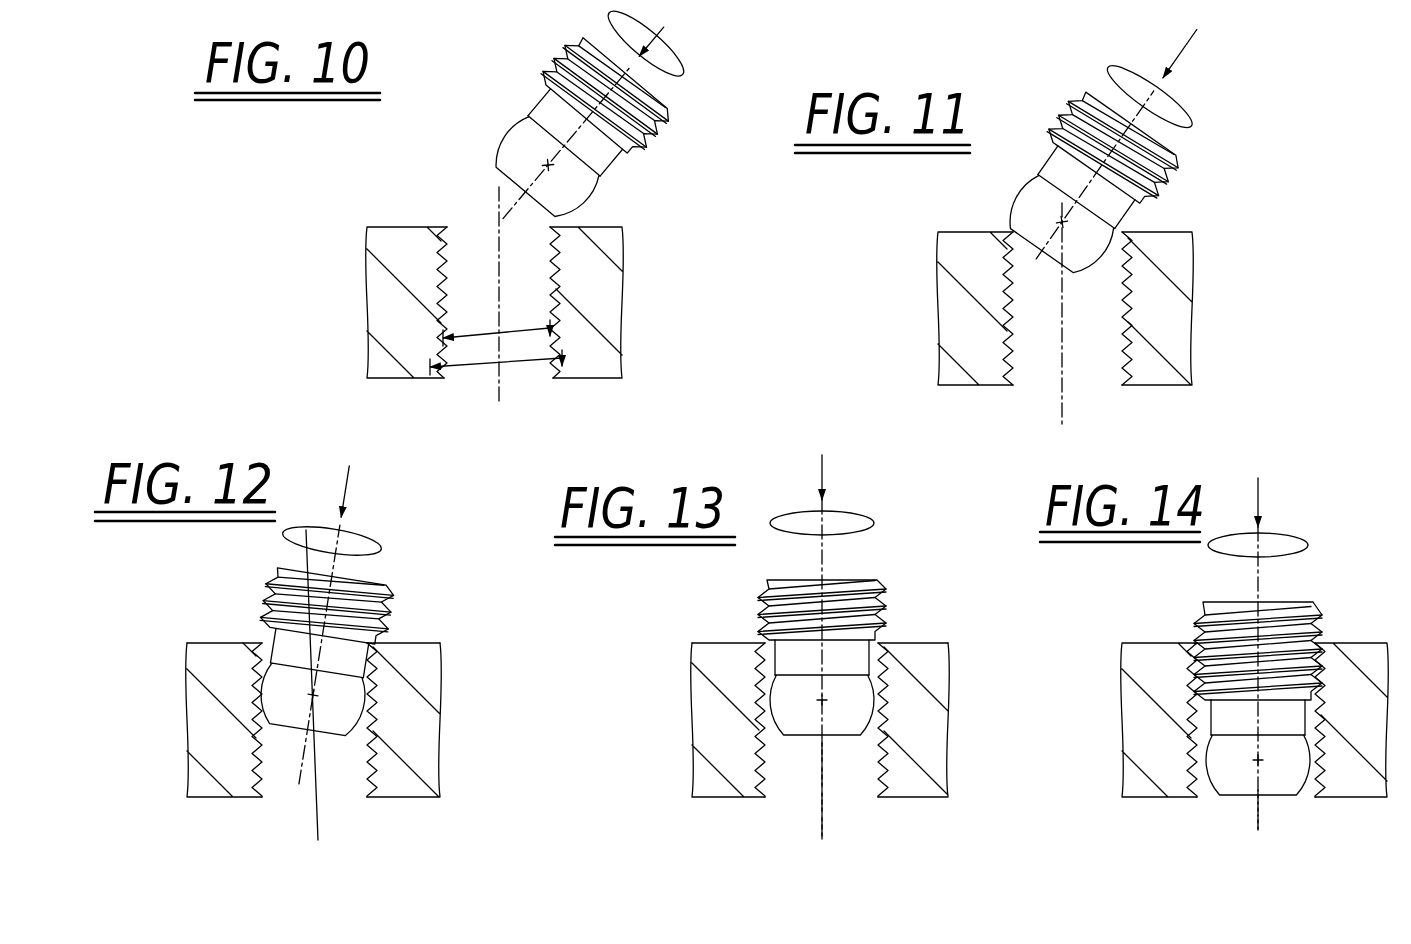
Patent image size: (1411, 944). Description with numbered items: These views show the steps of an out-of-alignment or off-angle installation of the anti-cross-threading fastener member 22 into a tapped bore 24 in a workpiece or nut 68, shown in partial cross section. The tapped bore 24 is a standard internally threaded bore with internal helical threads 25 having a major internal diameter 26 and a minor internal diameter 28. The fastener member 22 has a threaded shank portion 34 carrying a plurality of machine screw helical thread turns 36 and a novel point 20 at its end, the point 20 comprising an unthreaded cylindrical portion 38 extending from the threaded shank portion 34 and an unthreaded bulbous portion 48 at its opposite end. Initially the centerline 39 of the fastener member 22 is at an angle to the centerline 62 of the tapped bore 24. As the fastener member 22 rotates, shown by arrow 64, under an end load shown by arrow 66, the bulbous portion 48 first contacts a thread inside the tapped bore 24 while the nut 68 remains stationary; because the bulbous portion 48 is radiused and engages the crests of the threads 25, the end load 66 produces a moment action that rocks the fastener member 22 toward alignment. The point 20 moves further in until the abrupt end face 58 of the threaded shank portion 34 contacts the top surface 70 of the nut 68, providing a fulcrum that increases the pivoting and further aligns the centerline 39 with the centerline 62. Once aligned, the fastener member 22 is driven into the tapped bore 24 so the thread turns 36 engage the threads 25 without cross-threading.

In FIG. 10, the point 20 is at (573, 132).
In FIG. 11, the point 20 is at (1095, 172).
In FIG. 12, the point 20 is at (311, 668).
In FIG. 13, the point 20 is at (823, 670).
In FIG. 14, the point 20 is at (1254, 709).
In FIG. 10, the fastener member 22 is at (607, 87).
In FIG. 11, the fastener member 22 is at (1107, 137).
In FIG. 12, the fastener member 22 is at (311, 597).
In FIG. 13, the fastener member 22 is at (823, 597).
In FIG. 14, the fastener member 22 is at (1261, 634).
In FIG. 10, the tapped bore 24 is at (553, 360).
In FIG. 10, the internal helical threads 25 is at (441, 254).
In FIG. 11, the internal helical threads 25 is at (1015, 363).
In FIG. 12, the internal helical threads 25 is at (372, 790).
In FIG. 13, the internal helical threads 25 is at (758, 775).
In FIG. 14, the internal helical threads 25 is at (1317, 667).
In FIG. 10, the major internal diameter 26 is at (465, 362).
In FIG. 10, the minor internal diameter 28 is at (477, 330).
In FIG. 10, the threaded shank portion 34 is at (664, 116).
In FIG. 11, the threaded shank portion 34 is at (1177, 160).
In FIG. 12, the threaded shank portion 34 is at (380, 598).
In FIG. 13, the threaded shank portion 34 is at (868, 587).
In FIG. 14, the threaded shank portion 34 is at (1220, 637).
In FIG. 10, the machine screw helical thread turns 36 is at (650, 140).
In FIG. 11, the machine screw helical thread turns 36 is at (1067, 108).
In FIG. 12, the machine screw helical thread turns 36 is at (267, 608).
In FIG. 13, the machine screw helical thread turns 36 is at (757, 603).
In FIG. 14, the machine screw helical thread turns 36 is at (1313, 663).
In FIG. 11, the unthreaded cylindrical portion 38 is at (1100, 187).
In FIG. 12, the unthreaded cylindrical portion 38 is at (316, 660).
In FIG. 13, the unthreaded cylindrical portion 38 is at (853, 657).
In FIG. 14, the unthreaded cylindrical portion 38 is at (1237, 713).
In FIG. 10, the centerline of the fastener member 39 is at (610, 157).
In FIG. 11, the centerline of the fastener member 39 is at (1053, 250).
In FIG. 12, the centerline of the fastener member 39 is at (310, 710).
In FIG. 13, the centerline of the fastener member 39 is at (822, 820).
In FIG. 14, the centerline of the fastener member 39 is at (1260, 808).
In FIG. 10, the unthreaded bulbous portion 48 is at (557, 190).
In FIG. 11, the unthreaded bulbous portion 48 is at (1023, 213).
In FIG. 12, the unthreaded bulbous portion 48 is at (273, 695).
In FIG. 13, the unthreaded bulbous portion 48 is at (795, 708).
In FIG. 14, the unthreaded bulbous portion 48 is at (1230, 777).
In FIG. 10, the abrupt end face 58 is at (547, 83).
In FIG. 11, the abrupt end face 58 is at (1148, 210).
In FIG. 12, the abrupt end face 58 is at (370, 647).
In FIG. 10, the centerline of the tapped bore 62 is at (495, 245).
In FIG. 11, the centerline of the tapped bore 62 is at (1067, 358).
In FIG. 12, the centerline of the tapped bore 62 is at (315, 828).
In FIG. 14, the centerline of the tapped bore 62 is at (1260, 808).
In FIG. 10, the arrow indicating rotation 64 is at (674, 76).
In FIG. 11, the arrow indicating rotation 64 is at (1180, 128).
In FIG. 12, the arrow indicating rotation 64 is at (370, 557).
In FIG. 13, the arrow indicating rotation 64 is at (853, 538).
In FIG. 14, the arrow indicating rotation 64 is at (1289, 556).
In FIG. 10, the arrow indicating end load 66 is at (666, 30).
In FIG. 11, the arrow indicating end load 66 is at (1195, 48).
In FIG. 12, the arrow indicating end load 66 is at (336, 480).
In FIG. 13, the arrow indicating end load 66 is at (826, 478).
In FIG. 14, the arrow indicating end load 66 is at (1252, 506).
In FIG. 10, the nut 68 is at (380, 272).
In FIG. 11, the nut 68 is at (955, 307).
In FIG. 12, the nut 68 is at (432, 727).
In FIG. 13, the nut 68 is at (707, 707).
In FIG. 14, the nut 68 is at (1137, 680).
In FIG. 12, the top surface 70 is at (407, 643).
In FIG. 13, the top surface 70 is at (727, 643).